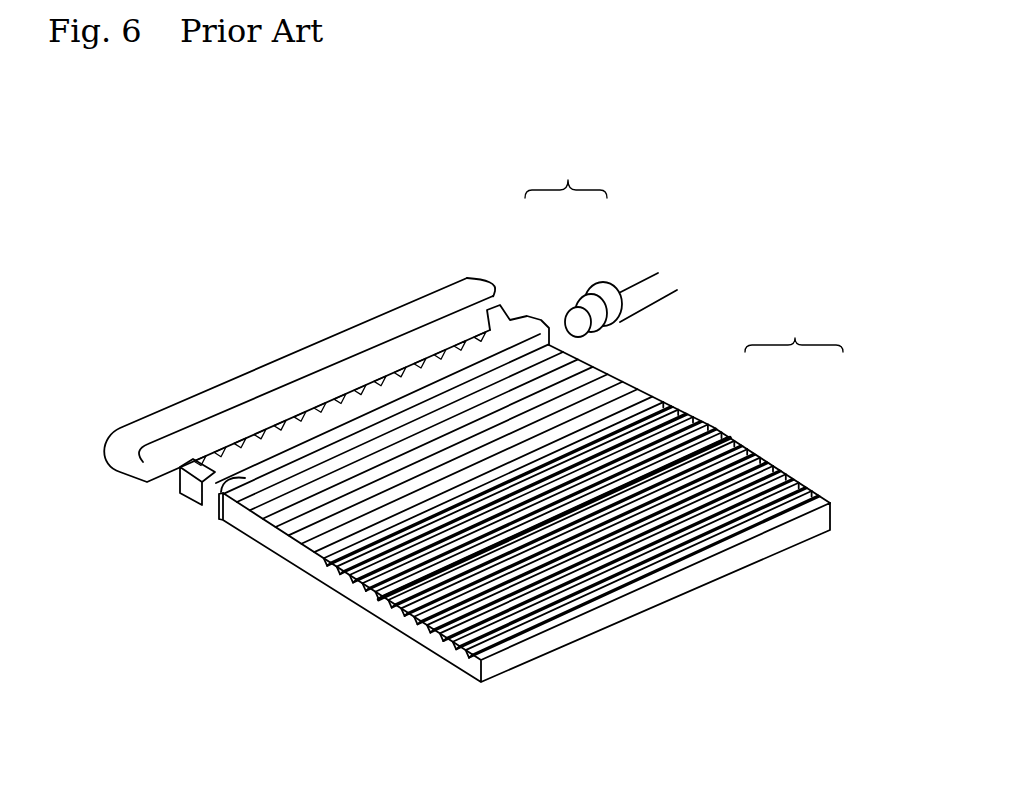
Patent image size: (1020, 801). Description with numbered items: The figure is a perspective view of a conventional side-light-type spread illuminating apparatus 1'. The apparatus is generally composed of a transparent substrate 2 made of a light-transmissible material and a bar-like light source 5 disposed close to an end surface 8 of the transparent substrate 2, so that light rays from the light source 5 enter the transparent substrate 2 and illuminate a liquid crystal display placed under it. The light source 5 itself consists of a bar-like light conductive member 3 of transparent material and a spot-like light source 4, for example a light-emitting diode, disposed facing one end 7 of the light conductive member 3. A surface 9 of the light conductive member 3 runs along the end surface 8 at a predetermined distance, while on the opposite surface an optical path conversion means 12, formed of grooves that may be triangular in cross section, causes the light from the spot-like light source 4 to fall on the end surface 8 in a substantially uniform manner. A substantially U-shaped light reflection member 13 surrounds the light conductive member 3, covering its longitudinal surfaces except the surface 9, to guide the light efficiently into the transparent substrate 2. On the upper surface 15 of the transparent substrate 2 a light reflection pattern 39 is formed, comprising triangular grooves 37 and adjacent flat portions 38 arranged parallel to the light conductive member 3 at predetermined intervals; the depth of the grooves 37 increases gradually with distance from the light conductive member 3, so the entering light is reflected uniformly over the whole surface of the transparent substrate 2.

The spread illuminating apparatus 1' is at (452, 191).
The transparent substrate 2 is at (380, 615).
The light conductive member 3 is at (520, 332).
The spot-like light source 4 is at (604, 282).
The light source 5 is at (566, 165).
The one end 7 is at (607, 326).
The end surface 8 is at (208, 494).
The surface 9 is at (272, 463).
The optical path conversion means 12 is at (383, 368).
The light reflection member 13 is at (188, 420).
The upper surface 15 is at (813, 490).
The grooves 37 is at (753, 452).
The flat portions 38 is at (770, 467).
The light reflection pattern 39 is at (794, 320).